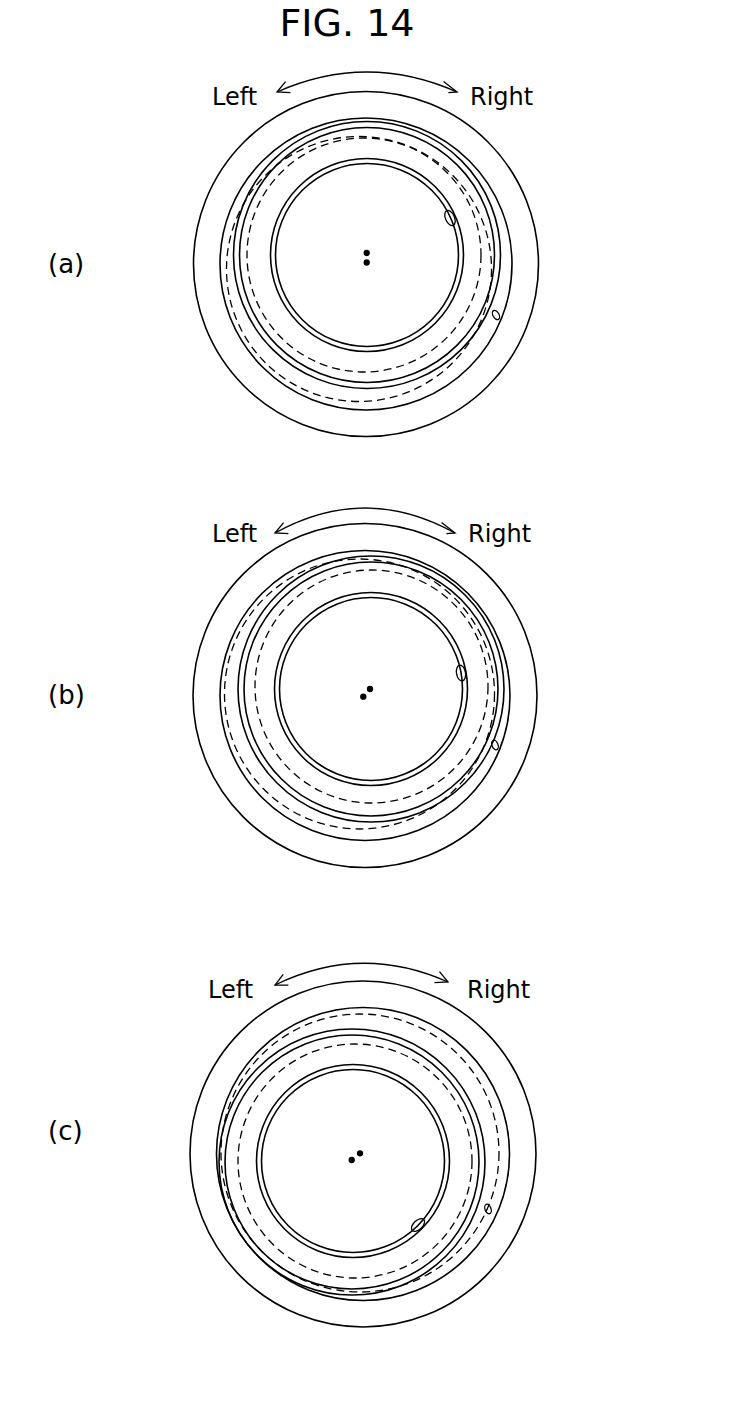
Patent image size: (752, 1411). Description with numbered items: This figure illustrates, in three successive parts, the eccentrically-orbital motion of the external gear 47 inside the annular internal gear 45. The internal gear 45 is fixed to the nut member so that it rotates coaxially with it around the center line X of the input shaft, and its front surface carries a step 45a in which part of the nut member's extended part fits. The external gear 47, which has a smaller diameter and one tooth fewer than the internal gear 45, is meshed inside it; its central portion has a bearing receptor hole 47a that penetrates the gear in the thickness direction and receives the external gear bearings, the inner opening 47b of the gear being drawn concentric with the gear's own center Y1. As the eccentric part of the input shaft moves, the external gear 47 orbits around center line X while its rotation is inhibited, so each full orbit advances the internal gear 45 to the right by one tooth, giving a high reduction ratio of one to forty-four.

The internal gear 45 is at (208, 195).
The step 45a is at (498, 318).
The external gear 47 is at (413, 375).
The bearing receptor hole 47a is at (455, 223).
The inner opening of ring member 47b is at (274, 254).
The center of ring member Y1 is at (366, 250).
The center line X is at (367, 265).